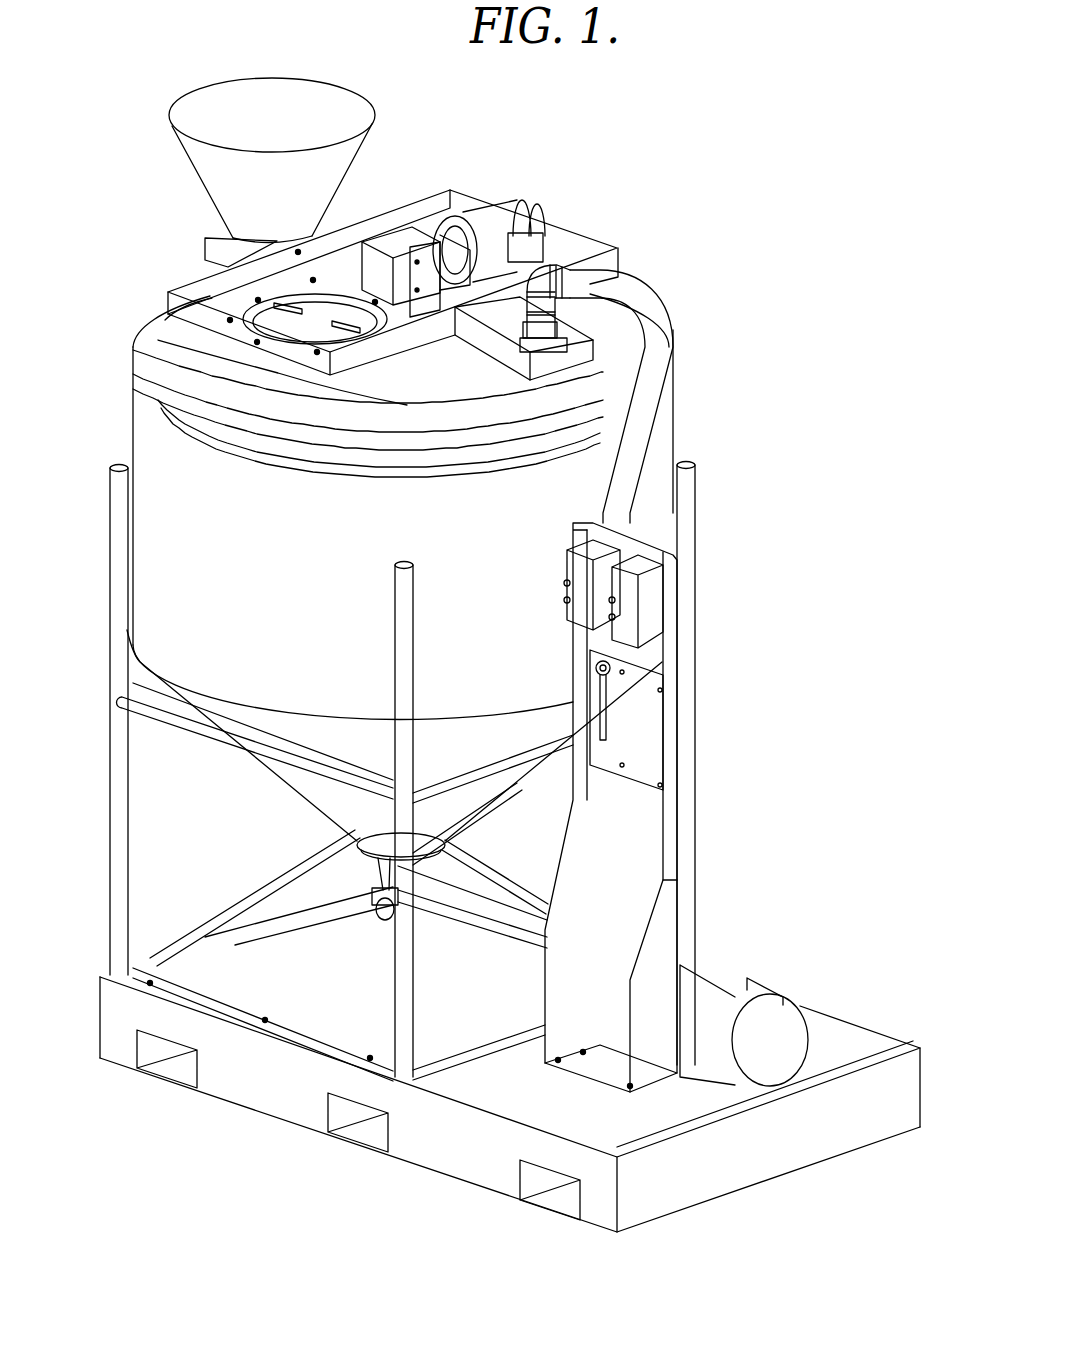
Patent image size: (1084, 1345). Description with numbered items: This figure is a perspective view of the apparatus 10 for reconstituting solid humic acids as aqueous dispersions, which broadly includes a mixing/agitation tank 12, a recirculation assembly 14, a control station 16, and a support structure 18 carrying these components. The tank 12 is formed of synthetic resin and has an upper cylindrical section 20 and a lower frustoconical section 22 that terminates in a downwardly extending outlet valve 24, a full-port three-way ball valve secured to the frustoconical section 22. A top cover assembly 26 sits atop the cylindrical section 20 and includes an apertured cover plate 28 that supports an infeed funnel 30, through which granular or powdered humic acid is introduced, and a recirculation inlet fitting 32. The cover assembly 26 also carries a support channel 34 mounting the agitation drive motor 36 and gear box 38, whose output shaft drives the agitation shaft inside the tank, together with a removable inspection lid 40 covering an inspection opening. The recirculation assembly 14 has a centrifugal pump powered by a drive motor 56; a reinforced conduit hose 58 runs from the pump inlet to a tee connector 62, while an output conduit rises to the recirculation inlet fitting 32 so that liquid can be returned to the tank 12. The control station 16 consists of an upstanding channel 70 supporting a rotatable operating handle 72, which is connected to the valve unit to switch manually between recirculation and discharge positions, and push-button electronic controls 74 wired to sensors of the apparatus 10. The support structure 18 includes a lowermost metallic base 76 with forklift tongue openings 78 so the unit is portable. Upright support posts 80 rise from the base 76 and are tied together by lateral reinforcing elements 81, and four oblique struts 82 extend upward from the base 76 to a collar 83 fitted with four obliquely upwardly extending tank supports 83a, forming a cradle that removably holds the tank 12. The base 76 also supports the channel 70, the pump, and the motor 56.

The apparatus 10 is at (735, 200).
The mixing/agitation tank 12 is at (700, 406).
The recirculation assembly 14 is at (768, 875).
The control station 16 is at (688, 794).
The support structure 18 is at (852, 1002).
The upper cylindrical section 20 is at (143, 452).
The lower frustoconical section 22 is at (316, 789).
The outlet valve 24 is at (425, 875).
The top cover assembly 26 is at (598, 184).
The apertured cover plate 28 is at (168, 307).
The infeed funnel 30 is at (235, 97).
The recirculation inlet fitting 32 is at (560, 266).
The support channel 34 is at (413, 328).
The agitation drive motor 36 is at (478, 222).
The gear box 38 is at (403, 236).
The removable inspection lid 40 is at (322, 305).
The drive motor 56 is at (715, 976).
The conduit hose 58 is at (512, 960).
The tee connector 62 is at (390, 922).
The upstanding channel 70 is at (673, 664).
The rotatable operating handle 72 is at (596, 720).
The push-button electronic controls 74 is at (620, 583).
The metallic base 76 is at (737, 1178).
The forklift tongue openings 78 is at (162, 1080).
The upright support posts 80 is at (690, 502).
The lateral reinforcing elements 81 is at (190, 725).
The oblique struts 82 is at (242, 903).
The collar 83 is at (363, 852).
The tank supports 83a is at (207, 712).